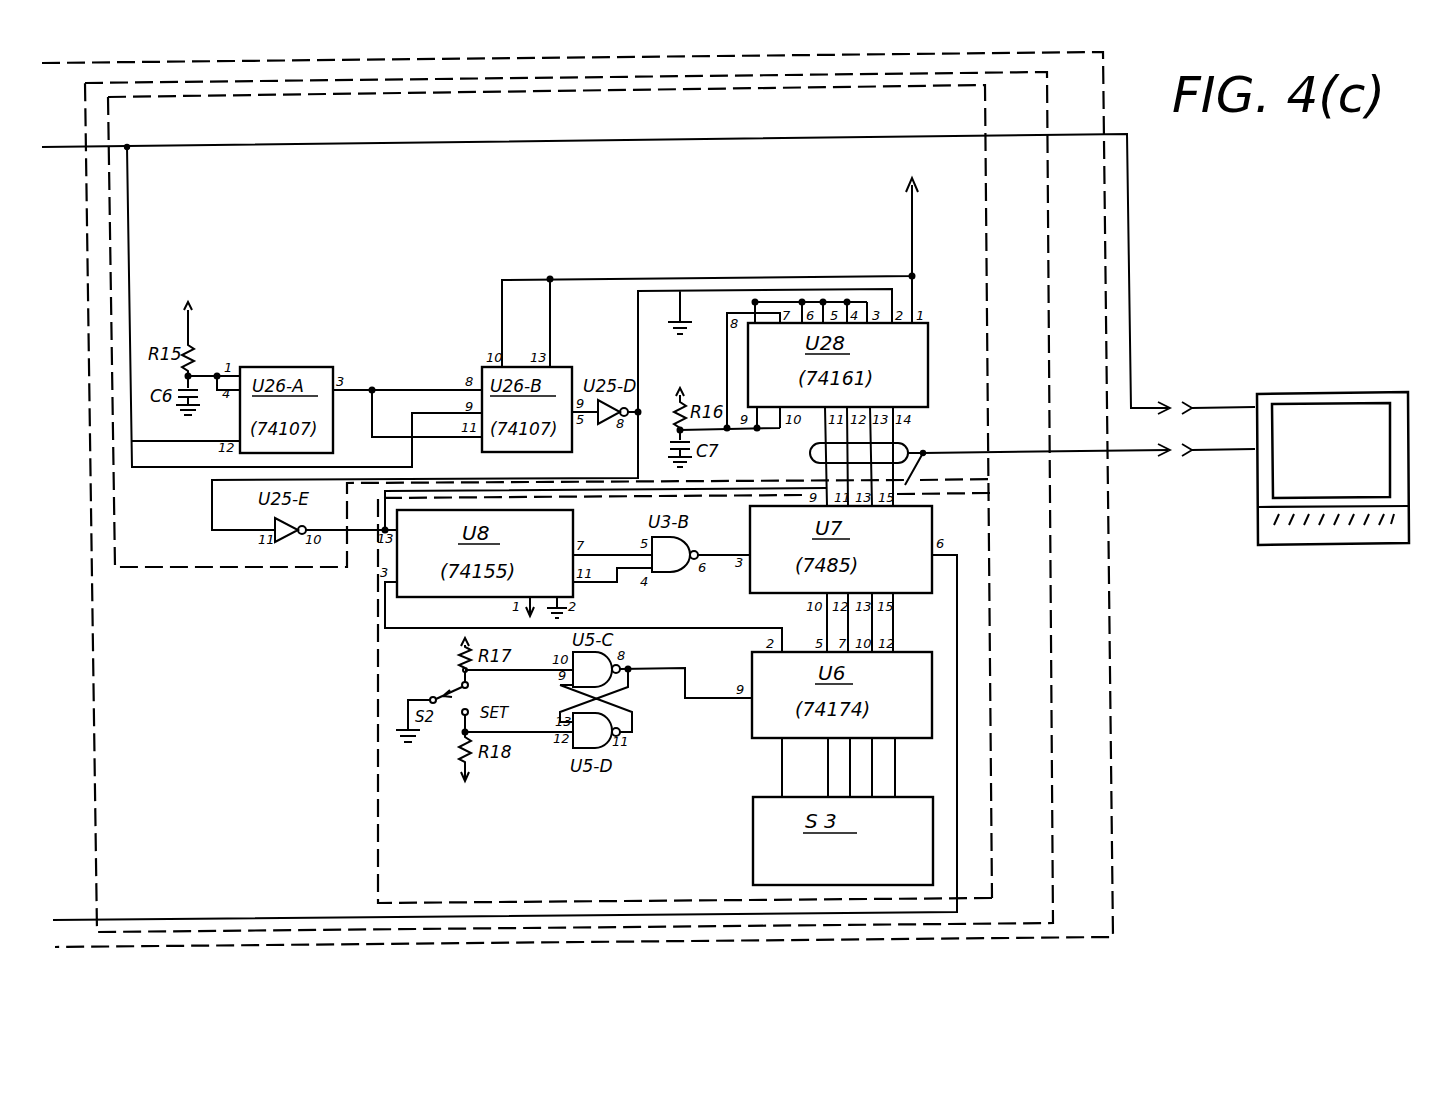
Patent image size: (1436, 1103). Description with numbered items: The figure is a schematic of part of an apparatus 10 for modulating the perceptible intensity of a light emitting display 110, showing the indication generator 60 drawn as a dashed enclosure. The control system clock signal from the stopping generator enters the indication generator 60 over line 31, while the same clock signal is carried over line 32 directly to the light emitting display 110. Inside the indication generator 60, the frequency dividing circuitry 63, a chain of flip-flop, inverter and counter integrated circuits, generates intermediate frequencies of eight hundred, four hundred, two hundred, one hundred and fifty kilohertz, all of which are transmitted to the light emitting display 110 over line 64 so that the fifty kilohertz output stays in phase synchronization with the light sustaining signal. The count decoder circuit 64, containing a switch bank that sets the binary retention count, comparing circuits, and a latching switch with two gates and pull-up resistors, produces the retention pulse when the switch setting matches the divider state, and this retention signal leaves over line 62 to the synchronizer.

The apparatus (outer dashed enclosure) 10 is at (1107, 216).
The indication generator 60 is at (1049, 212).
The frequency dividing circuitry 63 is at (253, 568).
The count decoder circuit 64 is at (375, 653).
The line 31 is at (131, 268).
The line 32 is at (820, 134).
The line 62 is at (68, 919).
The light emitting display 110 is at (1305, 394).